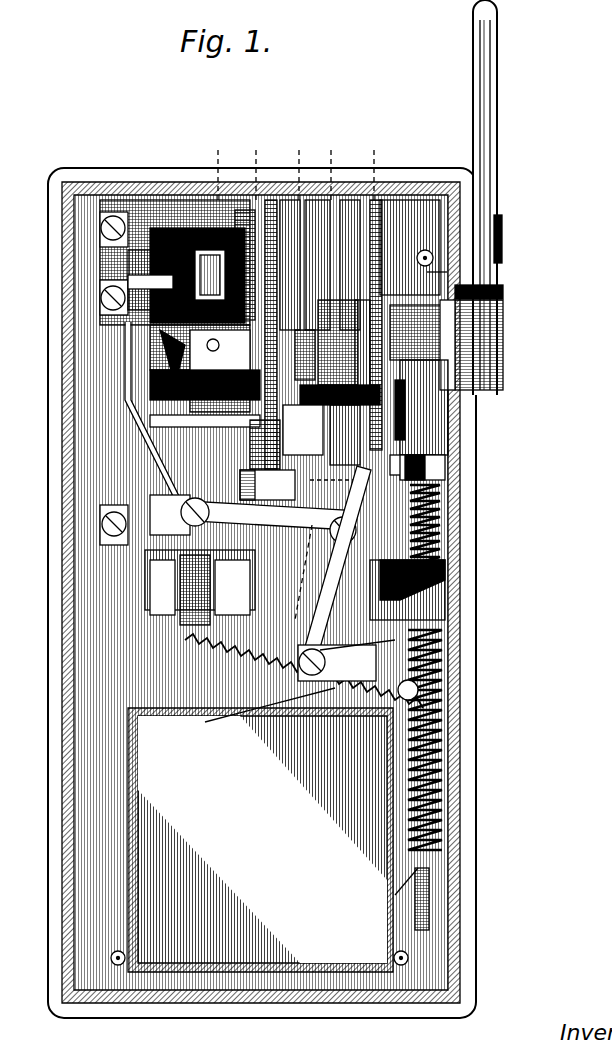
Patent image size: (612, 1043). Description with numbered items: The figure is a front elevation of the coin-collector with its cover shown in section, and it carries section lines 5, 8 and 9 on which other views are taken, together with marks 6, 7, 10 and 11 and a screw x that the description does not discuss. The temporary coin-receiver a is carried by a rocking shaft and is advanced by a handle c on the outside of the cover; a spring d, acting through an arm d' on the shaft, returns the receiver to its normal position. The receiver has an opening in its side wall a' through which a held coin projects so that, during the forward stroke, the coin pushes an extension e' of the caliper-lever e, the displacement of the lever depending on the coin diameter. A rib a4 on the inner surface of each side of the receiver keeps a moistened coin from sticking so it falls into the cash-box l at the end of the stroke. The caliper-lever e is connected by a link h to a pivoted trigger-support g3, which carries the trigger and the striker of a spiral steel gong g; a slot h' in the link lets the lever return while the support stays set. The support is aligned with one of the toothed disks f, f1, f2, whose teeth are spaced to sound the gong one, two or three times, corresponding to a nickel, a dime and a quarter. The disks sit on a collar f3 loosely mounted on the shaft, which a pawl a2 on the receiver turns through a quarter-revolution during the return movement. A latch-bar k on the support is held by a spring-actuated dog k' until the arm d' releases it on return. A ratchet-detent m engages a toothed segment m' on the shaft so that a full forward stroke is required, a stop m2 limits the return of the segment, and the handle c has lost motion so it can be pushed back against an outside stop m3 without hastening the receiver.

The temporary coin-receiver a is at (175, 238).
The screw x is at (160, 200).
The rib a4 is at (244, 212).
The side wall a' is at (100, 276).
The pawl a2 is at (205, 398).
The caliper-lever e is at (139, 411).
The extension e' is at (200, 353).
The toothed disk f is at (332, 332).
The toothed disk f1 is at (327, 290).
The toothed disk f2 is at (289, 335).
The collar f3 is at (340, 352).
The spiral steel gong g is at (205, 722).
The trigger-support g3 is at (346, 573).
The link h is at (253, 539).
The slot h' is at (302, 572).
The stop 10 is at (300, 479).
The screw 11 is at (418, 247).
The handle c is at (490, 165).
The ratchet-detent m is at (455, 417).
The toothed segment m' is at (422, 345).
The stop m2 is at (503, 297).
The stop m3 is at (502, 235).
The spring d is at (455, 780).
The arm d' is at (460, 470).
The latch-bar k is at (442, 586).
The spring-actuated dog k' is at (464, 533).
The cash-box l is at (260, 840).
The section line 5 is at (400, 153).
The section line 6 is at (352, 153).
The section line 7 is at (325, 153).
The section line 8 is at (195, 153).
The section line 9 is at (238, 153).